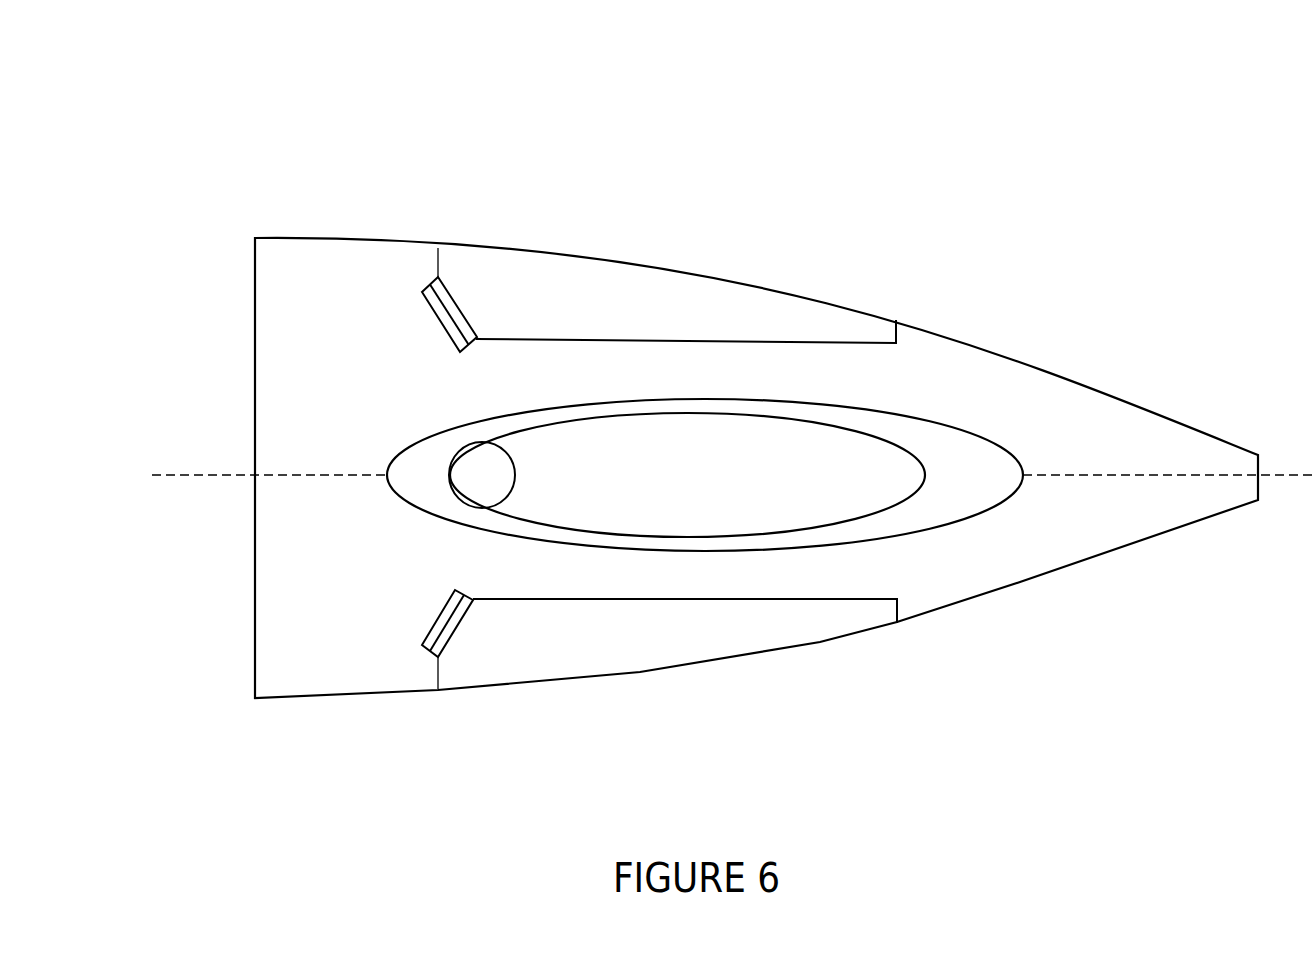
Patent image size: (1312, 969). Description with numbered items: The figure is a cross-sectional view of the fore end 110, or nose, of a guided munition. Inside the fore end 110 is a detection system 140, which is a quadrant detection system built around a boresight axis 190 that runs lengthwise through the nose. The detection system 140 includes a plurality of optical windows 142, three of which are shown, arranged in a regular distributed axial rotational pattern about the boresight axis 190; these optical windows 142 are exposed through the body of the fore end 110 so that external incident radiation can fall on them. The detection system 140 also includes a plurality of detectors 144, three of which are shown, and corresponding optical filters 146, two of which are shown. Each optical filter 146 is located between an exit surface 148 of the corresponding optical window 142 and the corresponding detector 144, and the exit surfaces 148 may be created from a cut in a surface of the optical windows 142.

The fore end 110 is at (756, 361).
The detection system 140 is at (958, 300).
The optical window 142 is at (637, 306).
The detector 144 is at (422, 282).
The optical filter 146 is at (428, 277).
The exit surface 148 is at (472, 298).
The boresight axis 190 is at (709, 481).